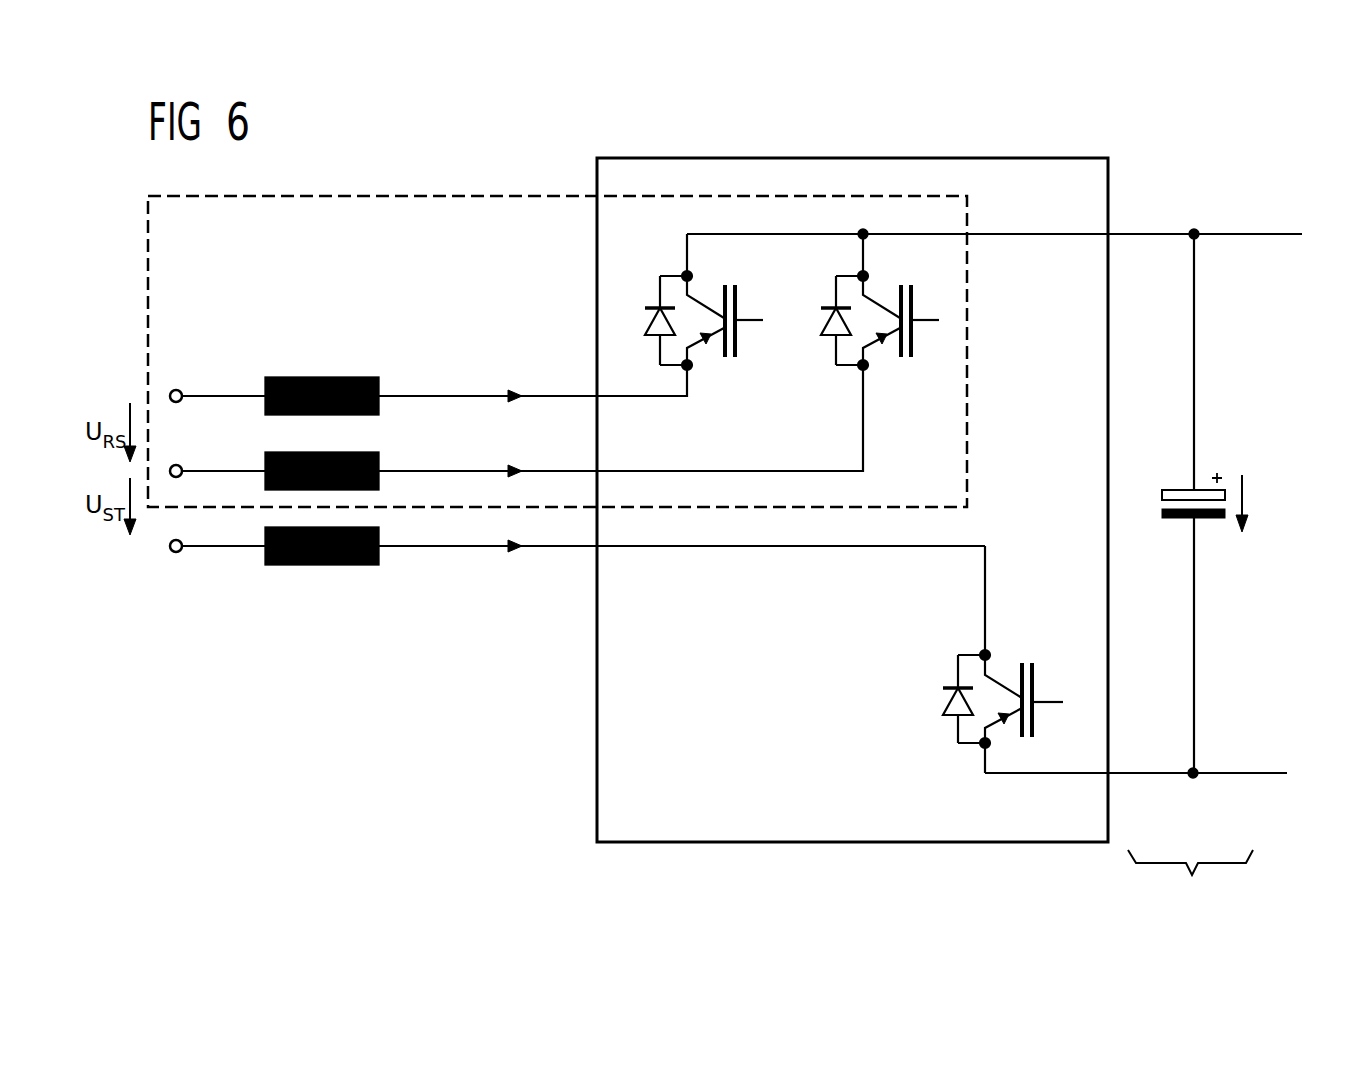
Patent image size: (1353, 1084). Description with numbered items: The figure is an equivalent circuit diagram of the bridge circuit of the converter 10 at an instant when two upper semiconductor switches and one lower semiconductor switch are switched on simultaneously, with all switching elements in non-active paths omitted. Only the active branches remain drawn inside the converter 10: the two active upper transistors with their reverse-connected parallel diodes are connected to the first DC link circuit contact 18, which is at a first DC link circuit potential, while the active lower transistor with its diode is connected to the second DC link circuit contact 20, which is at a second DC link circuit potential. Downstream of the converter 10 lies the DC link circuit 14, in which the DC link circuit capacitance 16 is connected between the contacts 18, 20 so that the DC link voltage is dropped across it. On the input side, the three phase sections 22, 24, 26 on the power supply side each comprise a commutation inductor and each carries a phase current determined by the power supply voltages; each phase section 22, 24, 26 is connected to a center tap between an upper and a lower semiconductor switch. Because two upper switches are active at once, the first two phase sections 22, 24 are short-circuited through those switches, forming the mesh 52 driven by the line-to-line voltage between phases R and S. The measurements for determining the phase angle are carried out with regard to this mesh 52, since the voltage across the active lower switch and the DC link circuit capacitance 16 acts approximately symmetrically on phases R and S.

The converter 10 is at (773, 844).
The DC link circuit 14 is at (1192, 875).
The DC link circuit capacitance 16 is at (1222, 494).
The first DC link circuit contact 18 is at (1197, 232).
The second DC link circuit contact 20 is at (1196, 770).
The phase section 22 is at (433, 393).
The phase section 24 is at (563, 468).
The phase section 26 is at (433, 548).
The mesh 52 is at (433, 196).